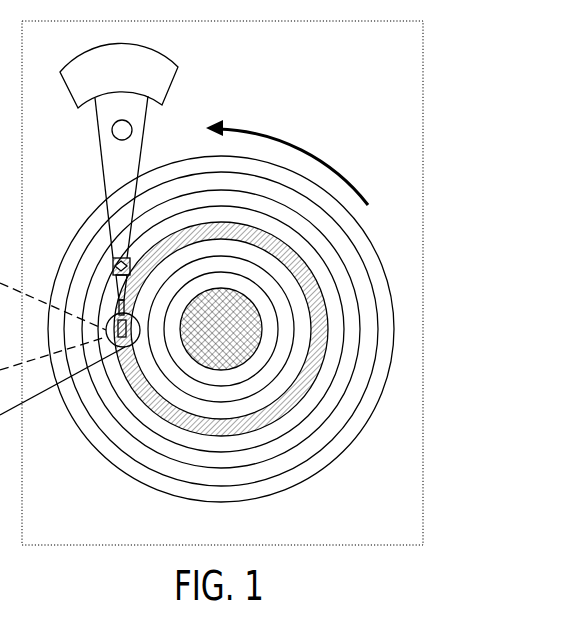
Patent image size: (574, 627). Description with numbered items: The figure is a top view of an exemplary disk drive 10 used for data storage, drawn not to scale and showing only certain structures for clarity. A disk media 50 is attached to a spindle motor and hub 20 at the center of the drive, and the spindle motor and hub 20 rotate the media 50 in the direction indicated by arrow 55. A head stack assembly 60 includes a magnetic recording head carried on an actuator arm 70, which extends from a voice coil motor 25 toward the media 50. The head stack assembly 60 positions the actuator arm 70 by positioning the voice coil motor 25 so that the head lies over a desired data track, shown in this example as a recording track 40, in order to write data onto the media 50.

The disk drive 10 is at (422, 113).
The spindle motor and hub 20 is at (222, 329).
The voice coil motor 25 is at (177, 67).
The recording track 40 is at (330, 329).
The disk media 50 is at (315, 473).
The arrow 55 is at (287, 135).
The head stack assembly 60 is at (113, 133).
The actuator arm 70 is at (122, 162).